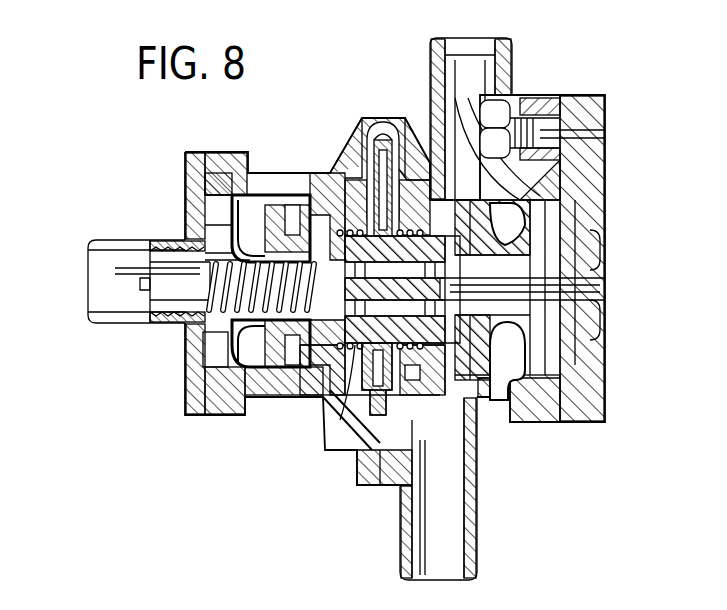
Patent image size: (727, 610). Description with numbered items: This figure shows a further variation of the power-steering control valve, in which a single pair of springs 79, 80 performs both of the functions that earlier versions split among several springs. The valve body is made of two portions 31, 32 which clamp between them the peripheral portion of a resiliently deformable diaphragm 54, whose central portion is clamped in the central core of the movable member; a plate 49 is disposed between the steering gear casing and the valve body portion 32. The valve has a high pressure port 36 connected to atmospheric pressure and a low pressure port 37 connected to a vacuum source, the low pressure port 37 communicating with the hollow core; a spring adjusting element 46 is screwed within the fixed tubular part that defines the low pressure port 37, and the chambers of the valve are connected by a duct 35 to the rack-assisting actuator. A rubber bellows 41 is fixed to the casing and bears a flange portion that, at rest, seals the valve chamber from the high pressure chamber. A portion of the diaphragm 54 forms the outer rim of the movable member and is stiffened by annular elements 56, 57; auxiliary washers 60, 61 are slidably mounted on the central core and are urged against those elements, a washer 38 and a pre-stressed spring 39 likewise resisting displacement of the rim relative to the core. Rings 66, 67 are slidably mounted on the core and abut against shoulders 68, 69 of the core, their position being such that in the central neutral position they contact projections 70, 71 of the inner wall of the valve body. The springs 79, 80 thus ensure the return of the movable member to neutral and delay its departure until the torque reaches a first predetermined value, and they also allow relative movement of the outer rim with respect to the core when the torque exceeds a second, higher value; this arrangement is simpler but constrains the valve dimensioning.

The valve body portion 31 is at (262, 186).
The valve body portion 32 is at (395, 118).
The duct 35 is at (455, 500).
The high pressure port 36 is at (468, 48).
The low pressure port 37 is at (90, 268).
The washer 38 is at (261, 287).
The pre-stressed spring 39 is at (205, 245).
The rubber bellows 41 is at (238, 170).
The spring adjusting element 46 is at (160, 240).
The plate 49 is at (598, 160).
The resiliently deformable diaphragm 54 is at (362, 135).
The annular element 56 is at (355, 460).
The annular element 57 is at (362, 484).
The auxiliary washer 60 is at (368, 140).
The auxiliary washer 61 is at (432, 150).
The ring 66 is at (312, 370).
The ring 67 is at (420, 350).
The shoulder 68 is at (375, 170).
The shoulder 69 is at (470, 280).
The projection 70 is at (328, 180).
The projection 71 is at (490, 100).
The spring 79 is at (345, 405).
The spring 80 is at (405, 380).